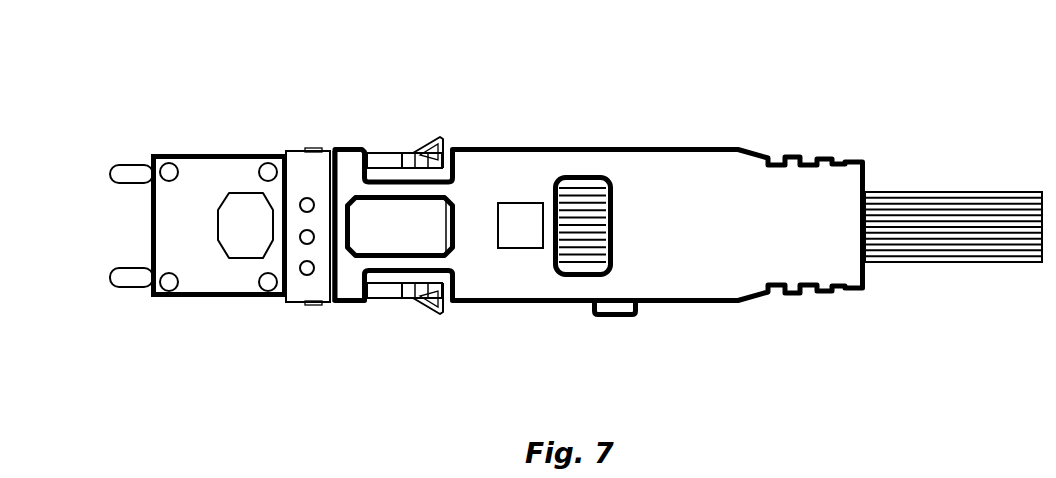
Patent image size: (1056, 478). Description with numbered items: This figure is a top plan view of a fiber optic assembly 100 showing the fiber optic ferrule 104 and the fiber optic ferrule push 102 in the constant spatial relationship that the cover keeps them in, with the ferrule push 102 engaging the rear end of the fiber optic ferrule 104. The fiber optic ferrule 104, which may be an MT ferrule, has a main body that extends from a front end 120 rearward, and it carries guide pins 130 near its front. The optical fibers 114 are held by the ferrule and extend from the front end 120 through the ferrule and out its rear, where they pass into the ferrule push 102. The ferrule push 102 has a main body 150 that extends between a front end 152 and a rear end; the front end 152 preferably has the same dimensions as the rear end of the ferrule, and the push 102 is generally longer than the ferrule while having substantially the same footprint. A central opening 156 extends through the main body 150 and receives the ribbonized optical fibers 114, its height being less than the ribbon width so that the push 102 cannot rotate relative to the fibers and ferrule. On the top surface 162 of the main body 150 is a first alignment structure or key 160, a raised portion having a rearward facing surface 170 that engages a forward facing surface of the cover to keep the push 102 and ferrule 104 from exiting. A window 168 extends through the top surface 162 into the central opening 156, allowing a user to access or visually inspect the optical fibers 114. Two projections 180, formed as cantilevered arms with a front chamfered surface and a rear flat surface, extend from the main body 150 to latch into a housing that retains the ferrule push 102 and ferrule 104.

The connector assembly 100 is at (564, 212).
The fiber optic ferrule push 102 is at (692, 322).
The fiber optic ferrule 104 is at (186, 274).
The optical fibers 114 is at (978, 192).
The front end 120 is at (151, 223).
The guide pins 130 is at (130, 288).
The main body 150 is at (792, 236).
The front end 152 is at (336, 278).
The central opening 156 is at (598, 187).
The first alignment structure 160 is at (412, 236).
The top surface 162 is at (504, 182).
The window 168 is at (615, 228).
The rearward facing surface 170 is at (453, 230).
The projection 180 is at (427, 138).